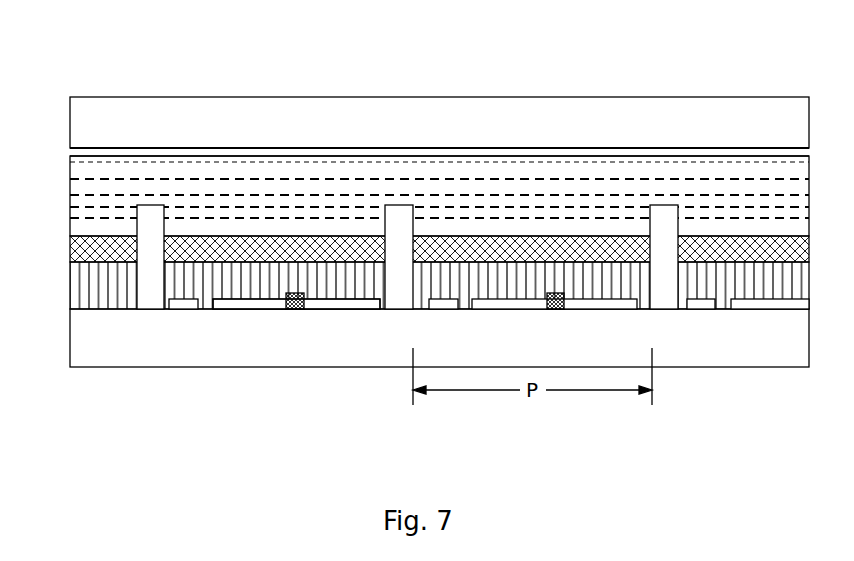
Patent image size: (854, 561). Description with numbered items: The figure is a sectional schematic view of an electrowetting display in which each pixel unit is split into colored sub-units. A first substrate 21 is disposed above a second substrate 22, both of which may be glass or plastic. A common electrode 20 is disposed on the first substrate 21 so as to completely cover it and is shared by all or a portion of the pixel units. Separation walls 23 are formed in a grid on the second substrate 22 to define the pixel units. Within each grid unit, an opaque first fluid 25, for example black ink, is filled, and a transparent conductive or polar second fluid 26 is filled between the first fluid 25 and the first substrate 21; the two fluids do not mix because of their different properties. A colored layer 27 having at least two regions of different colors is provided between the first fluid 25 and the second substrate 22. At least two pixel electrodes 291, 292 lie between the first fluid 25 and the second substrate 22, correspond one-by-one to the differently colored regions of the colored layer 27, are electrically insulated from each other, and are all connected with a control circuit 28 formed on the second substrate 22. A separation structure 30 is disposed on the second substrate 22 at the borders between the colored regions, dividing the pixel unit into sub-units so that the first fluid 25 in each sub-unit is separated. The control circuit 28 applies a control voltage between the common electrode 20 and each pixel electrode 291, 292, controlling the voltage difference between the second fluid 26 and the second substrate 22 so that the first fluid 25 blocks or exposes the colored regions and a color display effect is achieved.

The common electrode 20 is at (147, 150).
The first substrate 21 is at (253, 115).
The second substrate 22 is at (109, 345).
The separation walls 23 is at (398, 213).
The first fluid 25 is at (78, 250).
The second fluid 26 is at (83, 187).
The colored layer 27 is at (350, 285).
The control circuit 28 is at (183, 306).
The pixel electrode 291 is at (267, 305).
The pixel electrode 292 is at (322, 304).
The separation structure 30 is at (565, 298).